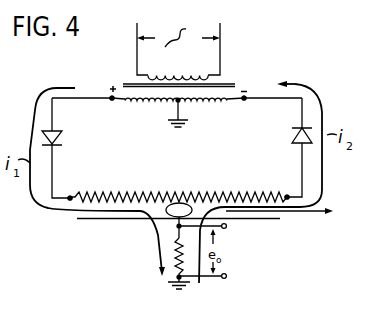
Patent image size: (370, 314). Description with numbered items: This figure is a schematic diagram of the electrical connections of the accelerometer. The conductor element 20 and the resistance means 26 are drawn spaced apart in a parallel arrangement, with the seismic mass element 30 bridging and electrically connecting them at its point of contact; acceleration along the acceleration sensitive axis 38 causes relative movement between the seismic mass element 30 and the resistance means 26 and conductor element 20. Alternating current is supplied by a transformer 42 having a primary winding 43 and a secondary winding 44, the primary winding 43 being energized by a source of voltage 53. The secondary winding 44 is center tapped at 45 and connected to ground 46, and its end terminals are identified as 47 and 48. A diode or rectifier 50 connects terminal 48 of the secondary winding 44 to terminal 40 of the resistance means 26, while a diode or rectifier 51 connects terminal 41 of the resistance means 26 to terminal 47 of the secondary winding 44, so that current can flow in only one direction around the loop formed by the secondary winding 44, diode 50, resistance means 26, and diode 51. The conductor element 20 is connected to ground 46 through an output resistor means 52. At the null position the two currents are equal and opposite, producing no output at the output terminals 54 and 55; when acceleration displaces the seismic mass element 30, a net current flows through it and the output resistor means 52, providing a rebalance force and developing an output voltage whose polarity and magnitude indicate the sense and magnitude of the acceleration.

The conductor element 20 is at (276, 220).
The resistance means 26 is at (141, 192).
The seismic mass element 30 is at (181, 204).
The acceleration sensitive axis 38 is at (313, 214).
The terminal of resistance means 40 is at (70, 196).
The terminal of resistance means 41 is at (286, 195).
The transformer 42 is at (128, 80).
The primary winding 43 is at (171, 74).
The secondary winding 44 is at (203, 101).
The center tap 45 is at (176, 102).
The ground 46 is at (189, 124).
The secondary winding terminal 47 is at (246, 95).
The secondary winding terminal 48 is at (111, 96).
The diode or rectifier 50 is at (63, 133).
The diode or rectifier 51 is at (292, 132).
The output resistor means 52 is at (176, 253).
The source of voltage 53 is at (180, 35).
The output terminal 54 is at (227, 227).
The output terminal 55 is at (227, 277).